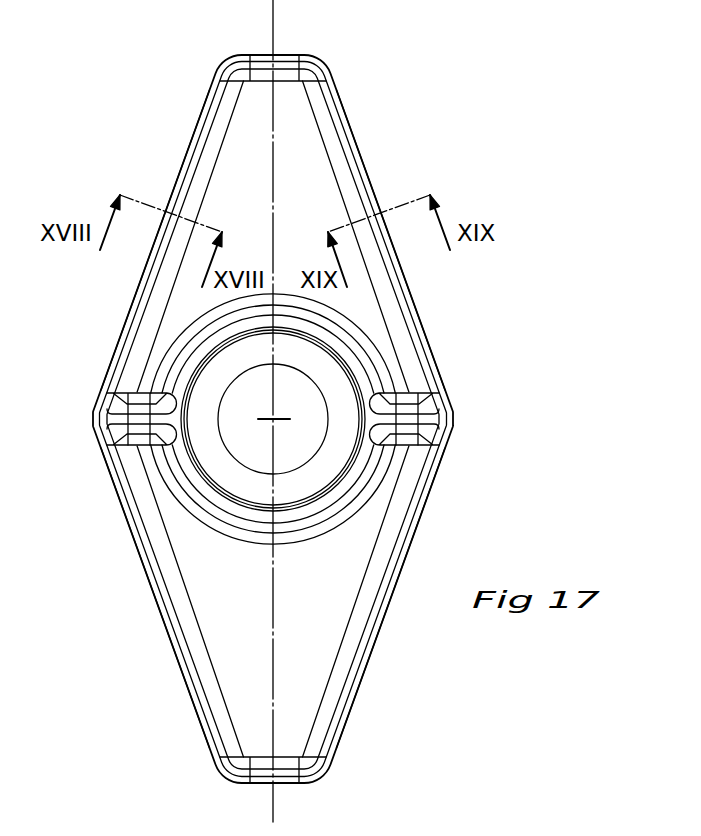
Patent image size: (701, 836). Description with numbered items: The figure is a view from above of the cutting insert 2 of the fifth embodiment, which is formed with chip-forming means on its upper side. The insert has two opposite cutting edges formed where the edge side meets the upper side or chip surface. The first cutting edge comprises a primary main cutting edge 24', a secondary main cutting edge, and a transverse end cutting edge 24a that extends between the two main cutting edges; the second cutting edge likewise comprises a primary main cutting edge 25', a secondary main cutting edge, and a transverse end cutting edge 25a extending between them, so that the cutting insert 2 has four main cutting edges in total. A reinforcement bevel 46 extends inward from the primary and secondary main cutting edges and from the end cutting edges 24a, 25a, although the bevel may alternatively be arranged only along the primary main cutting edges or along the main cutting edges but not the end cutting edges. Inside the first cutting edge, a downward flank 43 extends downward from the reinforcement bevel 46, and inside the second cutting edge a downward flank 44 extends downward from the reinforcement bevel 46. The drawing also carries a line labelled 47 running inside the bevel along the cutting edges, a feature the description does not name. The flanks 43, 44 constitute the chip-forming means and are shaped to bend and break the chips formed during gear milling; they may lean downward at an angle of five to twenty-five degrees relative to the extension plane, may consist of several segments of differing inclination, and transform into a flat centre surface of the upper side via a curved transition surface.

The cutting insert 2 is at (190, 50).
The transverse end cutting edge 25a is at (285, 54).
The transverse end cutting edge 24a is at (287, 784).
The reinforcement bevel 46 is at (209, 100).
The rake face edge 47 is at (297, 118).
The primary main cutting edge 25′ is at (190, 134).
The primary main cutting edge 24′ is at (373, 645).
The downward flank 44 is at (147, 300).
The downward flank 43 is at (143, 538).